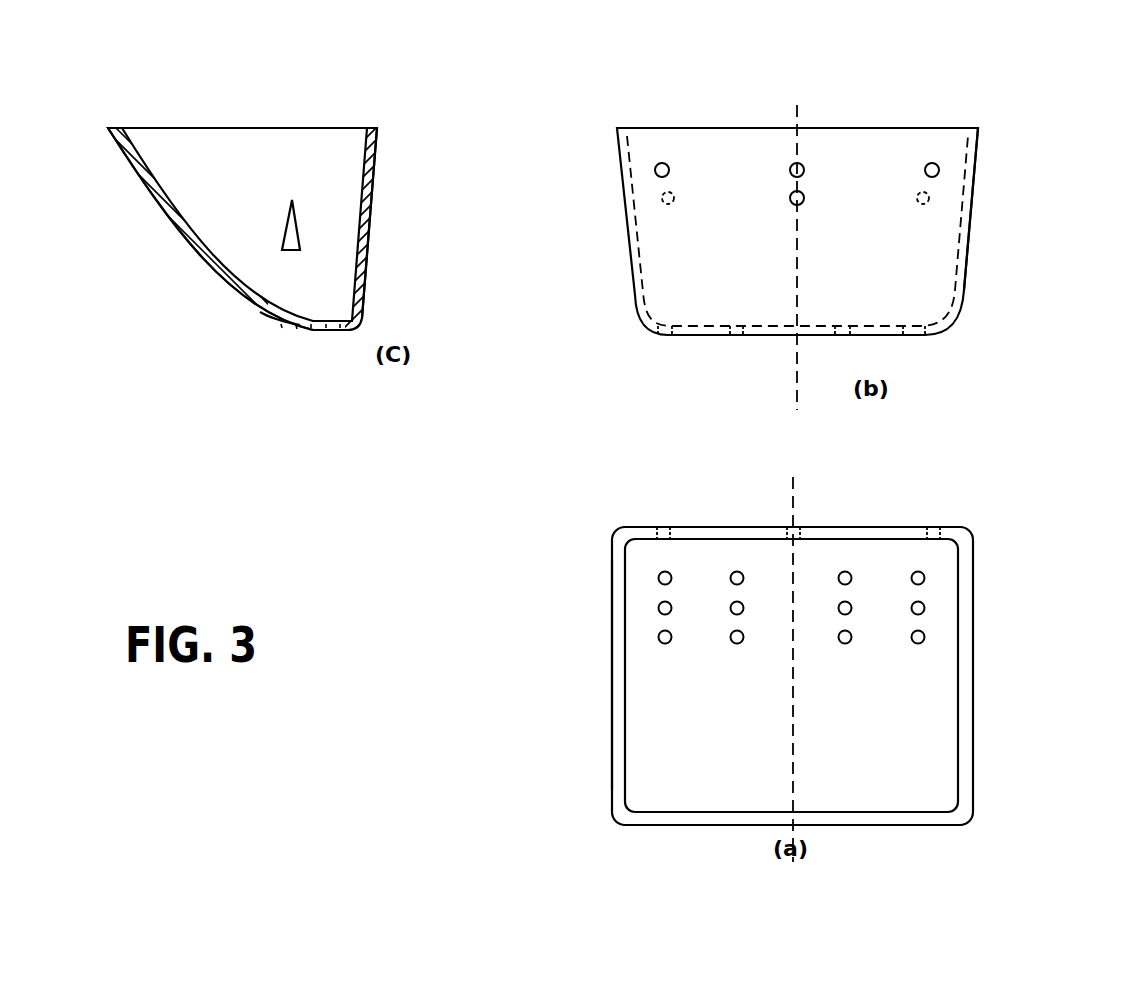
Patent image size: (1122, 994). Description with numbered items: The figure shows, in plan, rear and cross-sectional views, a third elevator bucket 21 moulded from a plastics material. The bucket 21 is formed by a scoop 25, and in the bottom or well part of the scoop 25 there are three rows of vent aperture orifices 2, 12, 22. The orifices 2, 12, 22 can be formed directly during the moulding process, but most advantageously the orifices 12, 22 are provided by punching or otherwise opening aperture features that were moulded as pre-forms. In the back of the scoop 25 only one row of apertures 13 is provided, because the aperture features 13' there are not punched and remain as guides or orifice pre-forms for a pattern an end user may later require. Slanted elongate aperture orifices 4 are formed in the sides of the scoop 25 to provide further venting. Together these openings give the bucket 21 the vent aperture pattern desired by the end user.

The third elevator bucket 21 is at (339, 106).
The apertures 13 is at (420, 223).
The aperture features 13' is at (849, 197).
The slanted elongate aperture orifices 4 is at (300, 242).
The scoop 25 is at (180, 243).
The vent aperture orifices 22 is at (277, 322).
The vent aperture orifices 12 is at (293, 327).
The vent aperture orifices 2 is at (333, 332).